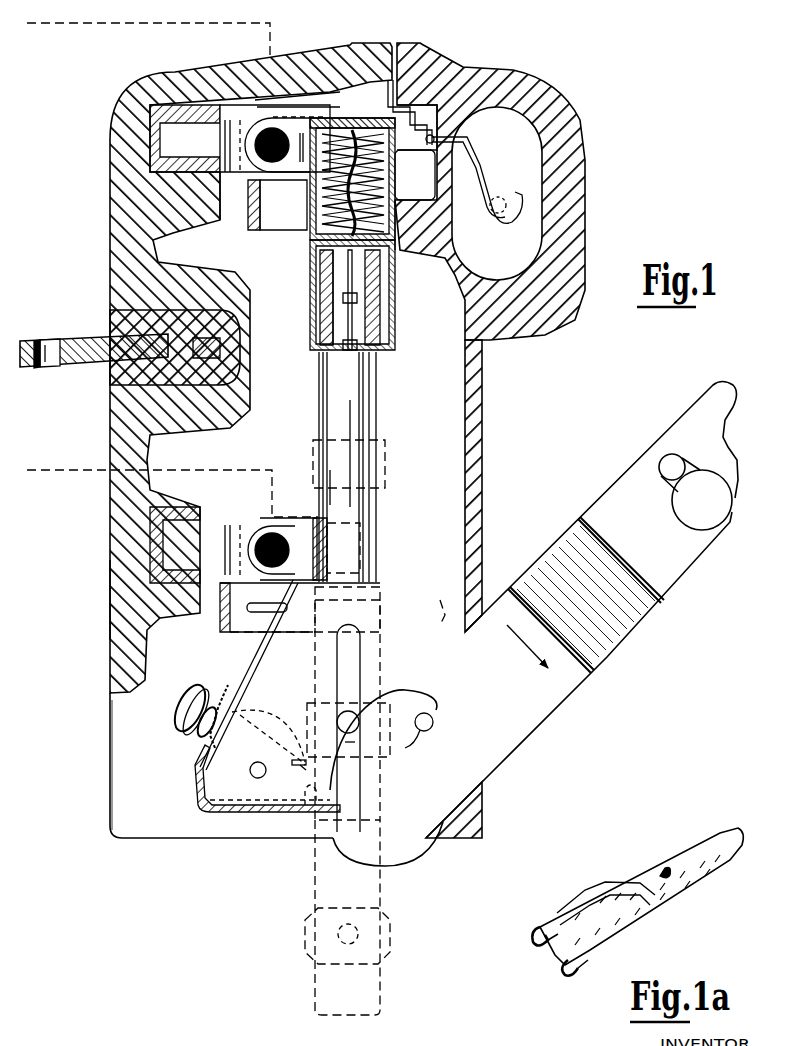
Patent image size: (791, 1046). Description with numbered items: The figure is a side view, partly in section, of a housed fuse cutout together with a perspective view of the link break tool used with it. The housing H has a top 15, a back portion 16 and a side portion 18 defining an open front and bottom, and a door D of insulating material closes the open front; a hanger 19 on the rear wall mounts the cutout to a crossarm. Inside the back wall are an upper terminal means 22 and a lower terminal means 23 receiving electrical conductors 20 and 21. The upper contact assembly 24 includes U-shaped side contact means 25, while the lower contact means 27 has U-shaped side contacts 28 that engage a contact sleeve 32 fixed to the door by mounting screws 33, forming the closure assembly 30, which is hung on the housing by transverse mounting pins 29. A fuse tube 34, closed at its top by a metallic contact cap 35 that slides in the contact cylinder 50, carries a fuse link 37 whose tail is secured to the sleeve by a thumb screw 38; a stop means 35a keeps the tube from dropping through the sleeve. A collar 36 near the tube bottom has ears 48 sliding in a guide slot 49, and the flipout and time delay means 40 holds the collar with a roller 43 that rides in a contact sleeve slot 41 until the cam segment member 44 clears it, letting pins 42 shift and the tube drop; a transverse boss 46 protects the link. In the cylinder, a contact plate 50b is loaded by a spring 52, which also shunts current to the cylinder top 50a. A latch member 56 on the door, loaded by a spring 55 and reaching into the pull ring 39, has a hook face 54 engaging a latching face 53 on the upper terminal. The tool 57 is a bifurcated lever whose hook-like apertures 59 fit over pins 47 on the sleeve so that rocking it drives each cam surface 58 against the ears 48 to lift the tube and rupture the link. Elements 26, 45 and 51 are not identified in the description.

In FIG. 1, the housing H is at (106, 229).
In FIG. 1, the door D is at (492, 410).
In FIG. 1, the top 15 is at (327, 85).
In FIG. 1, the back portion 16 is at (111, 586).
In FIG. 1, the side portion 18 is at (124, 737).
In FIG. 1, the hanger 19 is at (88, 360).
In FIG. 1, the electrical conductor 20 is at (94, 26).
In FIG. 1, the electrical conductor 21 is at (68, 472).
In FIG. 1, the upper terminal means 22 is at (266, 108).
In FIG. 1, the lower terminal means 23 is at (296, 518).
In FIG. 1, the upper contact assembly 24 is at (240, 224).
In FIG. 1, the side contact means 25 is at (274, 232).
In FIG. 1, the pin 26 is at (304, 290).
In FIG. 1, the lower contact means 27 is at (214, 602).
In FIG. 1, the side contacts 28 is at (248, 628).
In FIG. 1, the transverse mounting pins 29 is at (256, 764).
In FIG. 1, the closure assembly 30 is at (490, 566).
In FIG. 1, the contact sleeve 32 is at (280, 664).
In FIG. 1, the mounting screws 33 is at (442, 612).
In FIG. 1, the fuse tube 34 is at (325, 404).
In FIG. 1, the contact cap 35 is at (311, 266).
In FIG. 1, the stop means 35a is at (312, 320).
In FIG. 1, the collar 36 is at (398, 702).
In FIG. 1, the fuse link 37 is at (246, 812).
In FIG. 1, the thumb screw 38 is at (180, 708).
In FIG. 1, the pull ring 39 is at (572, 206).
In FIG. 1, the flipout and time delay means 40 is at (270, 812).
In FIG. 1, the contact sleeve slot 41 is at (294, 762).
In FIG. 1, the pins 42 is at (305, 768).
In FIG. 1, the roller 43 is at (272, 739).
In FIG. 1, the cam segment member 44 is at (276, 712).
In FIG. 1, the direction arrow 45 is at (302, 716).
In FIG. 1, the transverse boss 46 is at (306, 812).
In FIG. 1, the pins 47 is at (430, 732).
In FIG. 1, the ears 48 is at (352, 756).
In FIG. 1, the guide slot 49 is at (360, 664).
In FIG. 1, the contact cylinder 50 is at (386, 326).
In FIG. 1, the cylinder top 50a is at (338, 125).
In FIG. 1, the contact plate 50b is at (397, 232).
In FIG. 1, the spring 51 is at (325, 202).
In FIG. 1, the spring 52 is at (325, 220).
In FIG. 1, the latching face 53 is at (420, 135).
In FIG. 1, the hook face 54 is at (414, 103).
In FIG. 1, the spring 55 is at (432, 168).
In FIG. 1, the latch member 56 is at (484, 186).
In FIG. 1, the tool 57 is at (602, 652).
In FIG. 1A, the tool 57 is at (655, 882).
In FIG. 1, the cam surface 58 is at (358, 710).
In FIG. 1A, the cam surface 58 is at (534, 930).
In FIG. 1, the hook-like aperture 59 is at (412, 746).
In FIG. 1A, the hook-like aperture 59 is at (542, 947).